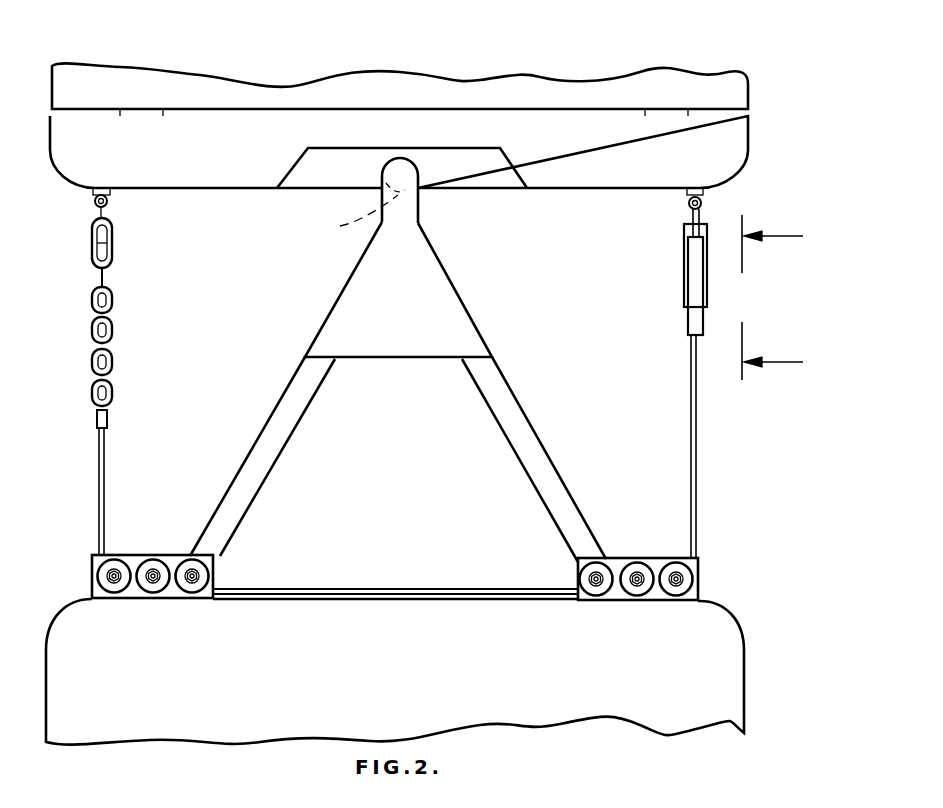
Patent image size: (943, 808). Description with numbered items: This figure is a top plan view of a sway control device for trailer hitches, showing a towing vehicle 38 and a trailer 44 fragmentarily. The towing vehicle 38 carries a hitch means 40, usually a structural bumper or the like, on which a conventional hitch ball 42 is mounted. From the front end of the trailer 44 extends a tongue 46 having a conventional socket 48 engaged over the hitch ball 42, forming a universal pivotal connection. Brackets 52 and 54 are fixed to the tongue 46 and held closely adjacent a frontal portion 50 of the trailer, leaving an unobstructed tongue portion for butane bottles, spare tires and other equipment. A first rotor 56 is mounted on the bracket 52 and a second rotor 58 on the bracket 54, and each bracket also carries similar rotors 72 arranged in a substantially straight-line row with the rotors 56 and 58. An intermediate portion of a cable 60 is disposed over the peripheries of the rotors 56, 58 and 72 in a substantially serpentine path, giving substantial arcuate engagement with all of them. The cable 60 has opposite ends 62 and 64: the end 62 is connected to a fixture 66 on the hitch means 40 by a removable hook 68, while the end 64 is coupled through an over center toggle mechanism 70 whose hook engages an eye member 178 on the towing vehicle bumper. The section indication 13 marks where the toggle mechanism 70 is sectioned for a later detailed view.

The towing vehicle 38 is at (427, 95).
The hitch means 40 is at (522, 130).
The socket 48 is at (386, 163).
The hitch ball 42 is at (365, 196).
The tongue 46 is at (500, 405).
The trailer 44 is at (735, 623).
The frontal portion 50 is at (437, 589).
The bracket 52 is at (170, 555).
The bracket 54 is at (617, 558).
The first rotor 56 is at (118, 598).
The second rotor 58 is at (690, 579).
The rotors 72 is at (192, 598).
The cable 60 is at (705, 368).
The cable end 62 is at (105, 428).
The cable end 64 is at (691, 387).
The fixture 66 is at (94, 202).
The removable hook 68 is at (110, 203).
The over center toggle mechanism 70 is at (684, 270).
The eye member 178 is at (706, 206).
The section line 13- 13 is at (789, 297).